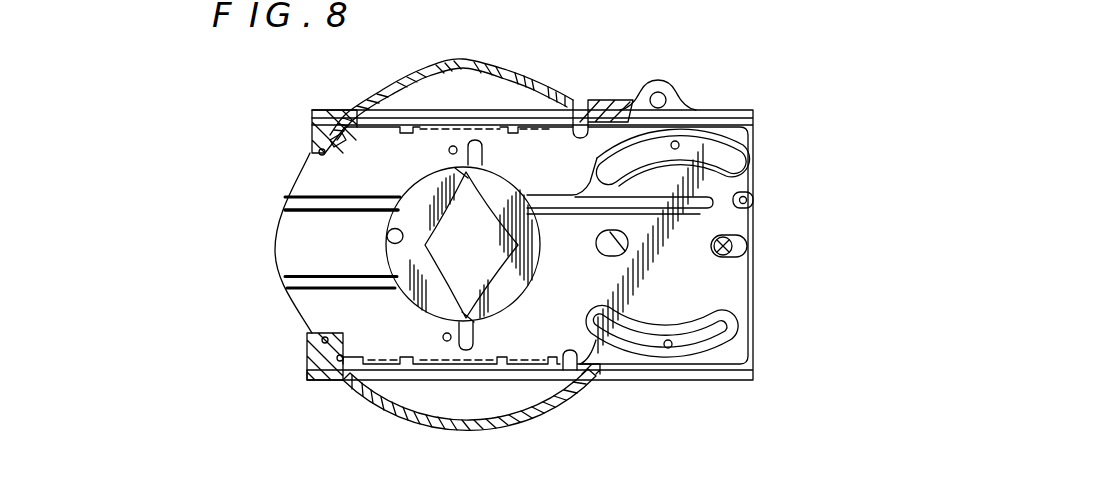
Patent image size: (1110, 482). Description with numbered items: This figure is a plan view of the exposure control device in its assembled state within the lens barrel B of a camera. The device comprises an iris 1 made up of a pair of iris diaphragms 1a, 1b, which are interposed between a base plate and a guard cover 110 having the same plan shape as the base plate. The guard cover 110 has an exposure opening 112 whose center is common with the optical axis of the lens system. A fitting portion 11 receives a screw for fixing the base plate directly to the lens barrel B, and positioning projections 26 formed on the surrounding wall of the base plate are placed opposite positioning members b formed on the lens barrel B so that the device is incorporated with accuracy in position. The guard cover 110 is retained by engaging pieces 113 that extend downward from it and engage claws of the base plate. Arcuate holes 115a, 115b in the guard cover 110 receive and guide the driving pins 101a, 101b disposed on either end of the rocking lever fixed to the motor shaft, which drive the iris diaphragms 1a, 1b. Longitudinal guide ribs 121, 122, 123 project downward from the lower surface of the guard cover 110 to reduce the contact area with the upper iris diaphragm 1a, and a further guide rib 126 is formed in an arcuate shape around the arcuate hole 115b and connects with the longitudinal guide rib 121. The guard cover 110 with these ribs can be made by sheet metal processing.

The iris 1 is at (541, 30).
The iris diaphragm 1a is at (498, 195).
The iris diaphragm 1b is at (430, 193).
The fitting portion 11 is at (656, 82).
The positioning projections 26 is at (330, 150).
The driving pin 101a is at (669, 349).
The driving pin 101b is at (678, 142).
The guard cover 110 is at (728, 283).
The exposure opening 112 is at (387, 243).
The engaging pieces 113 is at (549, 363).
The arcuate hole 115a is at (722, 336).
The arcuate hole 115b is at (740, 157).
The longitudinal guide rib 121 is at (700, 208).
The longitudinal guide rib 122 is at (295, 279).
The longitudinal guide rib 123 is at (300, 200).
The guide rib 126 is at (607, 173).
The lens barrel B is at (428, 62).
The positioning members b is at (348, 133).